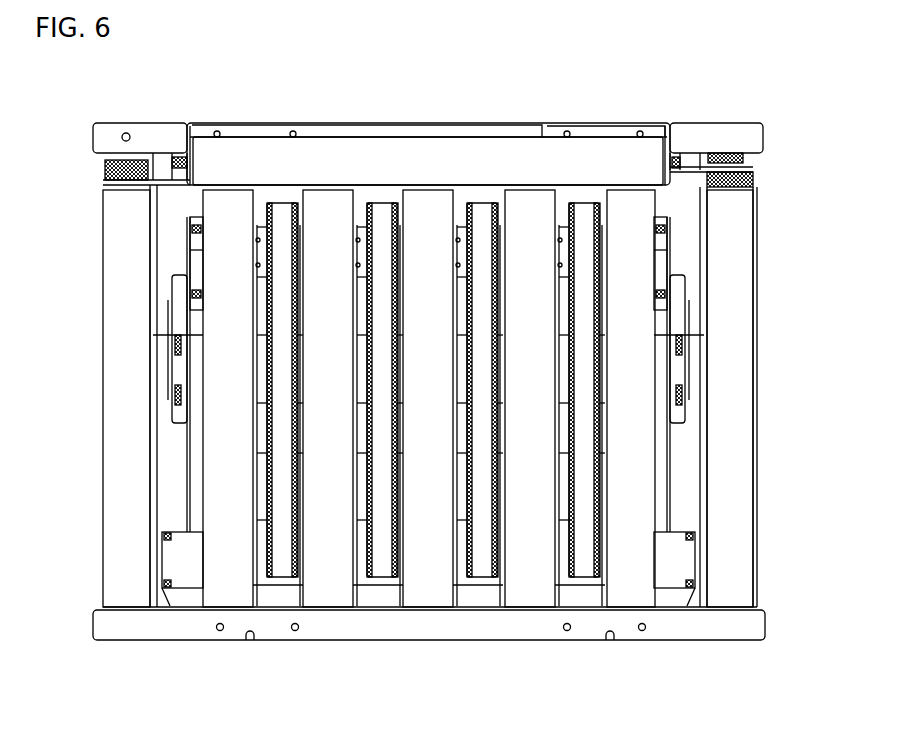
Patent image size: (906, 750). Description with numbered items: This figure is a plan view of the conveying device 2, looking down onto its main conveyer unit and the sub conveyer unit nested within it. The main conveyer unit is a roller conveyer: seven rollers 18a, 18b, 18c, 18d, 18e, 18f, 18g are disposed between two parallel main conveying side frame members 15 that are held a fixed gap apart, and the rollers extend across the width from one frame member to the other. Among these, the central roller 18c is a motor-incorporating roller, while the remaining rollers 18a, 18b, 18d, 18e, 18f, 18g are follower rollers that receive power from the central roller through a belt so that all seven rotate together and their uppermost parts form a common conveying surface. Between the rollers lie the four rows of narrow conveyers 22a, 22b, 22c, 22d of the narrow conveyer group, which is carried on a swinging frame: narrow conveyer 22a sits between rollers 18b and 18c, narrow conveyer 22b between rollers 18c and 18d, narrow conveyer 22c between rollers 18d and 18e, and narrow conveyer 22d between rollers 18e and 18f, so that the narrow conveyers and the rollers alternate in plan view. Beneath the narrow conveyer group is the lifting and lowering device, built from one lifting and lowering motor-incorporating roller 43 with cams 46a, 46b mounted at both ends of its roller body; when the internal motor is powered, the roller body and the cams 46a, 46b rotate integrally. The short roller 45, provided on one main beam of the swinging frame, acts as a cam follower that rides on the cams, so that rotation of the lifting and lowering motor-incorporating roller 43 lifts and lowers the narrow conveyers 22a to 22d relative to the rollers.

The conveying device 2 is at (488, 100).
The main conveying side frame member 15 is at (758, 128).
The roller 18a is at (128, 595).
The roller 18b is at (235, 597).
The roller 18c is at (330, 597).
The roller 18d is at (433, 595).
The roller 18e is at (533, 597).
The roller 18f is at (635, 593).
The roller 18g is at (730, 595).
The narrow conveyer 22a is at (283, 570).
The narrow conveyer 22b is at (372, 567).
The narrow conveyer 22c is at (487, 568).
The narrow conveyer 22d is at (578, 568).
The lifting and lowering motor-incorporating roller 43 is at (180, 333).
The short roller 45 is at (178, 290).
The cam 46a is at (178, 413).
The cam 46b is at (680, 410).